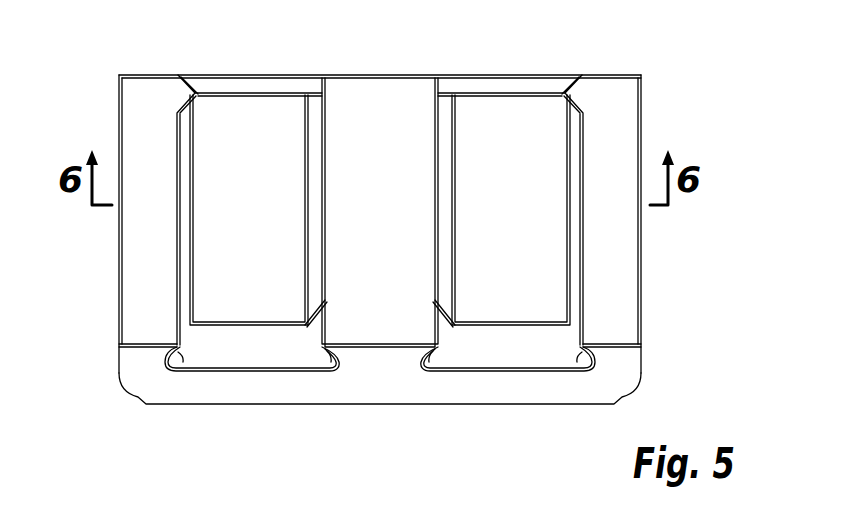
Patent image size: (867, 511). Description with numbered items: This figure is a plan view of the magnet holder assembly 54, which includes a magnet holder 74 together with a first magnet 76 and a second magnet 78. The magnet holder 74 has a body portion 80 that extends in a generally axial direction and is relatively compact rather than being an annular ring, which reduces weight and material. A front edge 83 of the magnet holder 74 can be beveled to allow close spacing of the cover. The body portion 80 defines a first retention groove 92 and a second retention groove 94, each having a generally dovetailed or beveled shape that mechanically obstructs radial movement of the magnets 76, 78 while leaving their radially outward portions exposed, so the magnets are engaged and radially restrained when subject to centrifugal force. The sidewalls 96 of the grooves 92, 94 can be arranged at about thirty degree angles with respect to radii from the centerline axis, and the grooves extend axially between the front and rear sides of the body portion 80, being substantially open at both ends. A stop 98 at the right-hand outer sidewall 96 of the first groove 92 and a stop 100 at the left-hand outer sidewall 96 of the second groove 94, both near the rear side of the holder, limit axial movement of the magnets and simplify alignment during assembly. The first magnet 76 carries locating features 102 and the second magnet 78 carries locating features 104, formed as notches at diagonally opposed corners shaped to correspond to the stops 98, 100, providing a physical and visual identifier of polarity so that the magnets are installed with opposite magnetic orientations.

The magnet holder assembly 54 is at (357, 42).
The magnet holder 74 is at (614, 289).
The first magnet 76 is at (495, 120).
The second magnet 78 is at (218, 116).
The body portion 80 is at (612, 147).
The front edge 83 is at (610, 387).
The first retention groove 92 is at (527, 350).
The second retention groove 94 is at (270, 350).
The sidewalls 96 is at (177, 353).
The stop 98 is at (584, 86).
The stop 100 is at (177, 92).
The locating feature 102 is at (573, 107).
The locating feature 104 is at (307, 323).